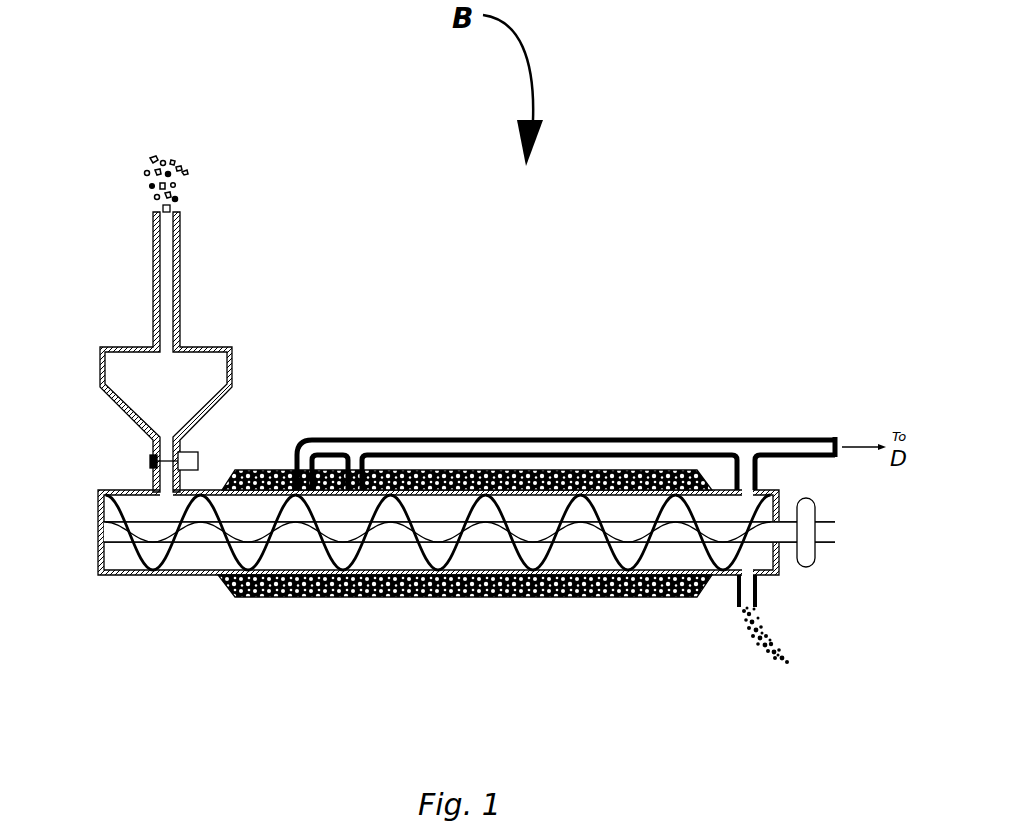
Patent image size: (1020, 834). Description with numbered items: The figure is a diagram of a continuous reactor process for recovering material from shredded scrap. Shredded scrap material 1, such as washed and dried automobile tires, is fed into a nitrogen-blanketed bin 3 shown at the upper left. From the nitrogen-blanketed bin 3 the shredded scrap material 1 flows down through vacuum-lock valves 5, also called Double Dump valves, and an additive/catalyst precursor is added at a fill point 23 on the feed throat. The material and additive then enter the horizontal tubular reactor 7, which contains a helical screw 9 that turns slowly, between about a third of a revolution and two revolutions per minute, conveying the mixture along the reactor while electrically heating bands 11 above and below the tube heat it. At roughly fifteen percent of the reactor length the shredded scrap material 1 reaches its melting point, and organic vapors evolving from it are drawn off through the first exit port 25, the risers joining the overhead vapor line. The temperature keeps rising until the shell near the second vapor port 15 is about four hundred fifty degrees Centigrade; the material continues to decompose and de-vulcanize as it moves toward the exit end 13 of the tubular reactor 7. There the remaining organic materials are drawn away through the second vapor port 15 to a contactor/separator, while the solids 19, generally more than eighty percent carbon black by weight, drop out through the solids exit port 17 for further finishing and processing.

The shredded scrap material 1 is at (187, 176).
The nitrogen-blanketed bin 3 is at (205, 348).
The vacuum-lock valves 5 is at (198, 461).
The tubular reactor 7 is at (530, 407).
The helical screw 9 is at (223, 582).
The electrically heating bands 11 is at (413, 593).
The exit end 13 is at (703, 583).
The second vapor port 15 is at (747, 450).
The solids exit port 17 is at (739, 606).
The solids 19 is at (767, 630).
The fill point 23 is at (150, 461).
The first exit port 25 is at (300, 470).